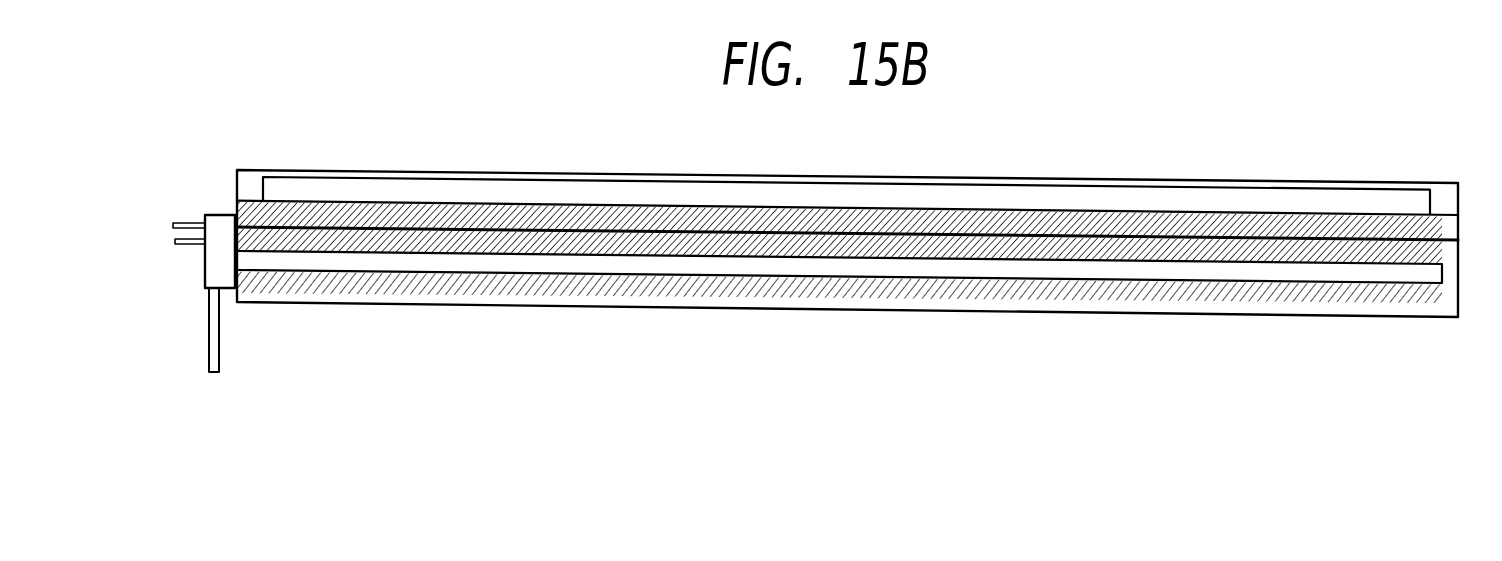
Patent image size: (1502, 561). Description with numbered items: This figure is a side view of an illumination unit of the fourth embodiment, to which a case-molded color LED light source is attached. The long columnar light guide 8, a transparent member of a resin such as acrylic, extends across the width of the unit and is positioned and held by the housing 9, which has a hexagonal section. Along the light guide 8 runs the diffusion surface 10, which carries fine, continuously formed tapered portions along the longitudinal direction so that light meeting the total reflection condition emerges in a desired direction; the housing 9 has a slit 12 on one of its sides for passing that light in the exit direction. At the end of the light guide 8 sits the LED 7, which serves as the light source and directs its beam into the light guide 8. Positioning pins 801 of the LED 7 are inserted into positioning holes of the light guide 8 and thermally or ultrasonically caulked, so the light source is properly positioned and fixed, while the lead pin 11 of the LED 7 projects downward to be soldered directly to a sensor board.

The LED 7 is at (218, 220).
The light guide 8 is at (1044, 223).
The housing 9 is at (248, 179).
The diffusion surface 10 is at (818, 258).
The lead pin 11 is at (219, 348).
The slit 12 is at (636, 187).
The positioning pin 801 is at (180, 248).